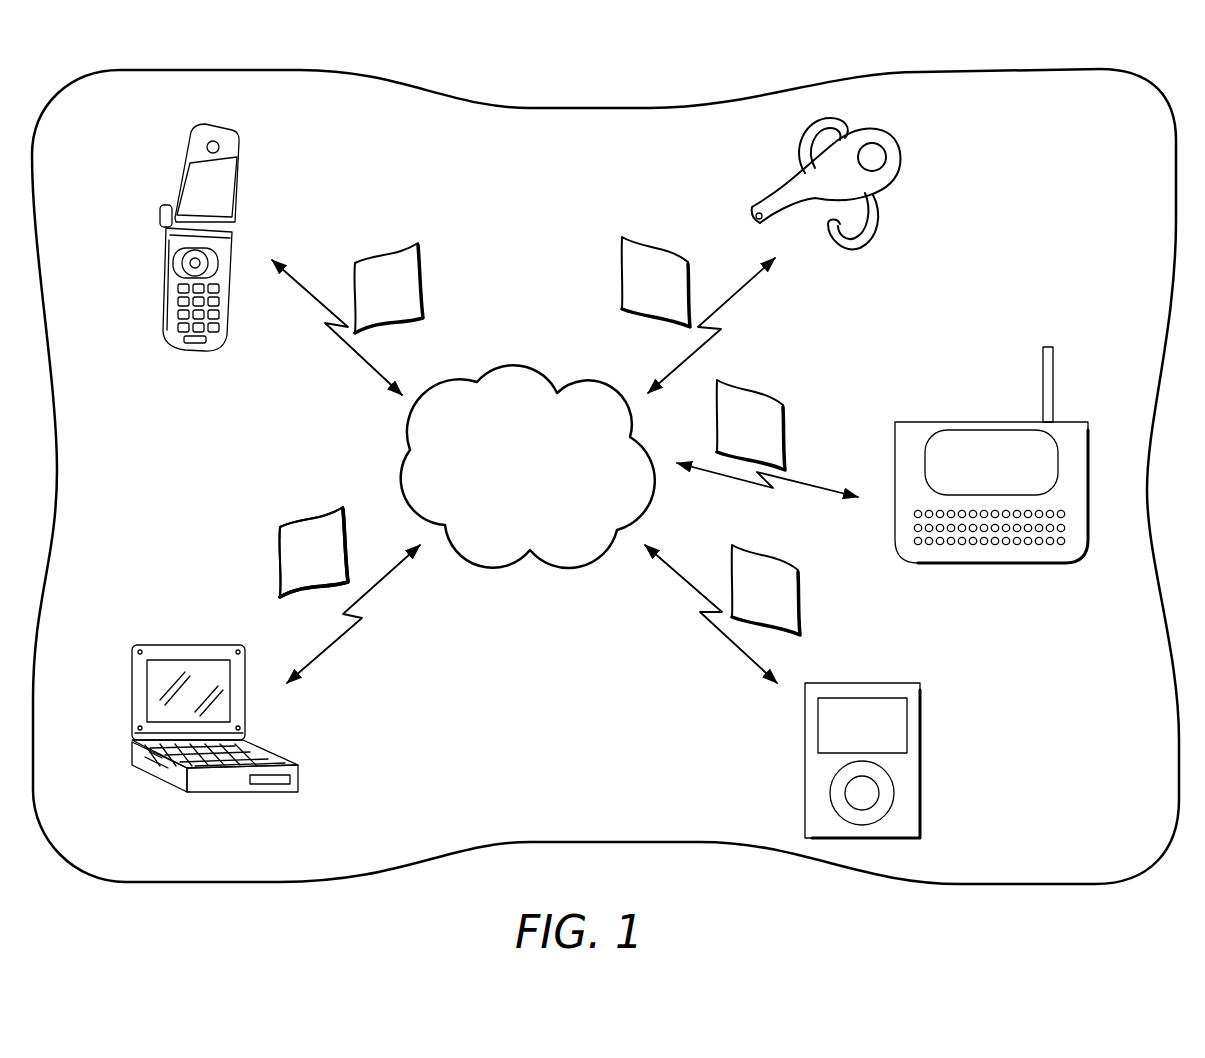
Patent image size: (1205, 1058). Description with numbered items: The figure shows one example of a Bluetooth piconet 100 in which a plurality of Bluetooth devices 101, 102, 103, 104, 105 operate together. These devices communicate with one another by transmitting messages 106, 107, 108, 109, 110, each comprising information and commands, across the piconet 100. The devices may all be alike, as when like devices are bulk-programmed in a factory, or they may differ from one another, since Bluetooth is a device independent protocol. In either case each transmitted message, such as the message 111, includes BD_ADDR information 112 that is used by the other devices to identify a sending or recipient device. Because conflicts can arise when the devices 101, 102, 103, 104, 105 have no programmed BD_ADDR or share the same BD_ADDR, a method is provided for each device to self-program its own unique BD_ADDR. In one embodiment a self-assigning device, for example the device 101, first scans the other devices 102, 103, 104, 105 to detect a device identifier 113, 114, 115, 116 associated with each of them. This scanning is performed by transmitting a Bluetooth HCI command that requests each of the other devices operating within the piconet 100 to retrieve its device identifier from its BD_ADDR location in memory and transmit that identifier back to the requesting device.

The Bluetooth piconet 100 is at (1143, 89).
The Bluetooth device 101 is at (272, 757).
The Bluetooth device 102 is at (205, 128).
The Bluetooth device 103 is at (885, 212).
The Bluetooth device 104 is at (989, 421).
The Bluetooth device 105 is at (860, 682).
The message 106 is at (363, 620).
The message 107 is at (335, 345).
The message 108 is at (730, 302).
The message 109 is at (812, 488).
The message 110 is at (718, 627).
The message 111 is at (300, 522).
The BD_ADDR information 112 is at (302, 555).
The device identifier 113 is at (403, 293).
The device identifier 114 is at (638, 283).
The device identifier 115 is at (762, 425).
The device identifier 116 is at (777, 592).